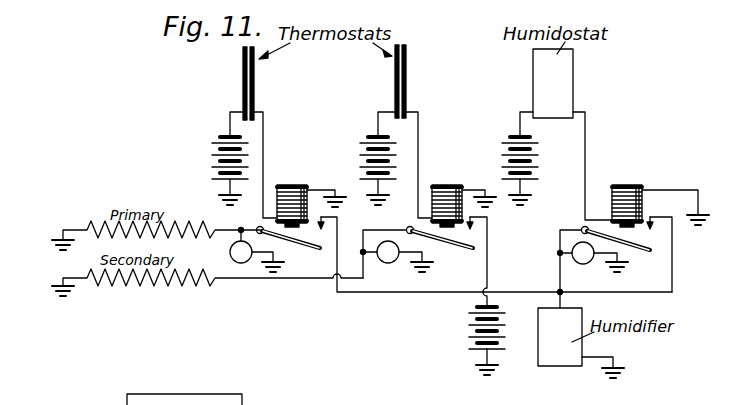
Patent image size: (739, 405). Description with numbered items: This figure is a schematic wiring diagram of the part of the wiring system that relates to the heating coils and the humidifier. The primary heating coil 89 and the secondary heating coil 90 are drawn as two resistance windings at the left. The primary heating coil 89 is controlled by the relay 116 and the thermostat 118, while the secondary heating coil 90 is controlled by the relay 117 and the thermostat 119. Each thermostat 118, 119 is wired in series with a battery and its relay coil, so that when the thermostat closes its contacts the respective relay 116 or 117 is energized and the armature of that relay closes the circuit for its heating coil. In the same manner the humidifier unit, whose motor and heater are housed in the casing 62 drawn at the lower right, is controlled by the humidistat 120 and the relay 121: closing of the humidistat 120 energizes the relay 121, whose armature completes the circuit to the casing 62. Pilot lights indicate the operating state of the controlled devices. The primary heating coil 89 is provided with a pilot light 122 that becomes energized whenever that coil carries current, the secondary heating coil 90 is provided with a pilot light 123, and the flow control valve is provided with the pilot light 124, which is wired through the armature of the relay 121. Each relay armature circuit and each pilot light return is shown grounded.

The thermostat 118 is at (243, 82).
The thermostat 119 is at (395, 82).
The humidistat 120 is at (533, 77).
The relay 116 is at (304, 178).
The relay 117 is at (446, 186).
The relay 121 is at (627, 186).
The primary heating coil 89 is at (98, 226).
The secondary heating coil 90 is at (85, 284).
The pilot light 122 is at (230, 255).
The pilot light 123 is at (386, 263).
The pilot light 124 is at (583, 264).
The casing 62 is at (561, 366).